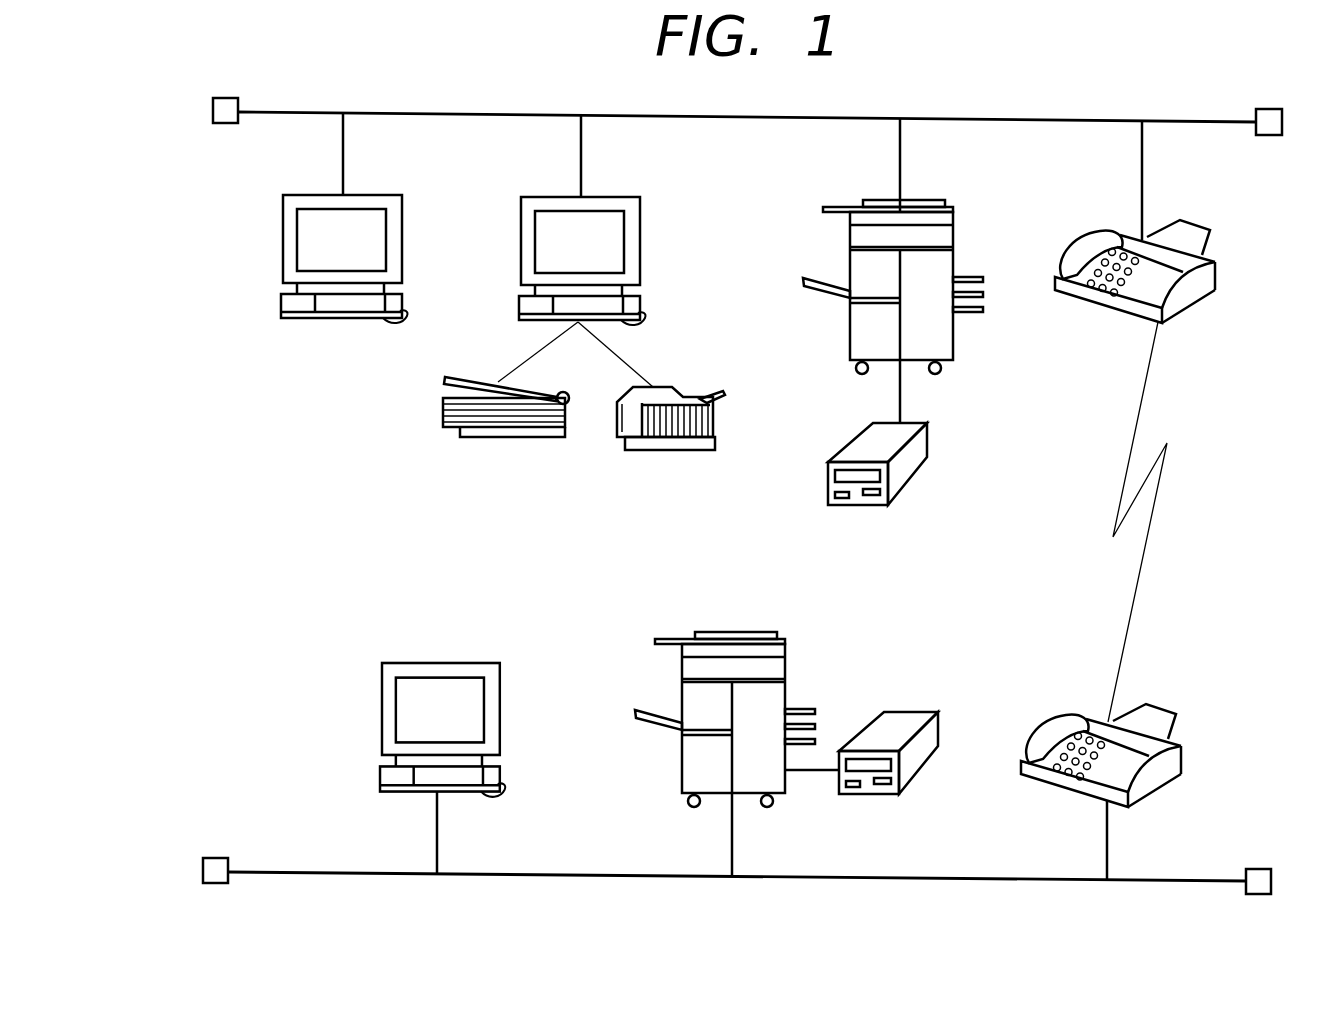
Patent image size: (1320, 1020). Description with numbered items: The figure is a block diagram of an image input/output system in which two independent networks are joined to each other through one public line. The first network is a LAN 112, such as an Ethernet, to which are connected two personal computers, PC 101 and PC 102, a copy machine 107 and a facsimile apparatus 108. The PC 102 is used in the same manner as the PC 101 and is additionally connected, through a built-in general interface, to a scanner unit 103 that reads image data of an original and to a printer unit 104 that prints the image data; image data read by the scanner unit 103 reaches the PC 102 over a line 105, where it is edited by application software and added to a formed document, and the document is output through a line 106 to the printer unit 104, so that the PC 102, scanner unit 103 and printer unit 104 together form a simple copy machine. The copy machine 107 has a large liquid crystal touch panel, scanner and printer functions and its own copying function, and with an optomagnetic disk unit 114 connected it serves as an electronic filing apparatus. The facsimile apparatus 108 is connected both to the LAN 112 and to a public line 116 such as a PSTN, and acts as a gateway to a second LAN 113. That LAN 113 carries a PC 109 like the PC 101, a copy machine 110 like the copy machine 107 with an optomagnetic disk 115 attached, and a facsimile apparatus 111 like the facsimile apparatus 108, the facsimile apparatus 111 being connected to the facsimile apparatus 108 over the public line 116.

The personal computer 101 is at (376, 194).
The personal computer 102 is at (616, 196).
The scanner unit 103 is at (443, 416).
The printer unit 104 is at (716, 420).
The line 105 is at (532, 357).
The line 106 is at (633, 362).
The copy machine 107 is at (927, 200).
The facsimile apparatus 108 is at (1200, 223).
The personal computer 109 is at (466, 665).
The copy machine 110 is at (757, 630).
The facsimile apparatus 111 is at (1160, 707).
The LAN 112 is at (299, 108).
The LAN 113 is at (297, 870).
The optomagnetic disk unit 114 is at (928, 438).
The optomagnetic disk 115 is at (910, 712).
The public line 116 is at (1157, 487).